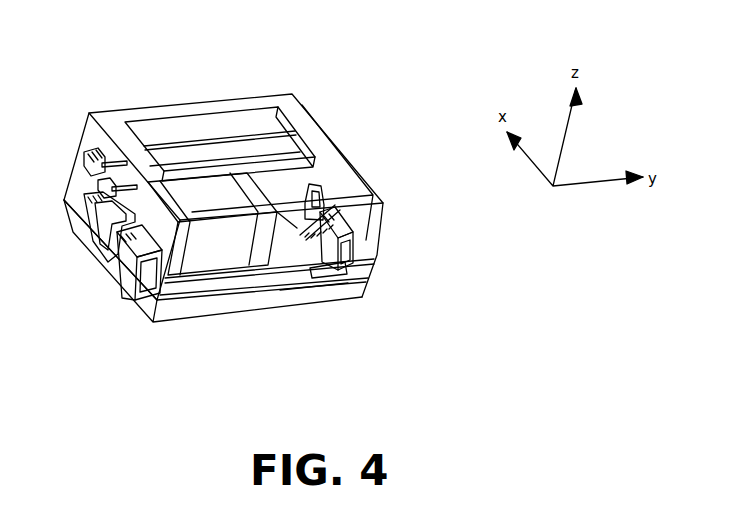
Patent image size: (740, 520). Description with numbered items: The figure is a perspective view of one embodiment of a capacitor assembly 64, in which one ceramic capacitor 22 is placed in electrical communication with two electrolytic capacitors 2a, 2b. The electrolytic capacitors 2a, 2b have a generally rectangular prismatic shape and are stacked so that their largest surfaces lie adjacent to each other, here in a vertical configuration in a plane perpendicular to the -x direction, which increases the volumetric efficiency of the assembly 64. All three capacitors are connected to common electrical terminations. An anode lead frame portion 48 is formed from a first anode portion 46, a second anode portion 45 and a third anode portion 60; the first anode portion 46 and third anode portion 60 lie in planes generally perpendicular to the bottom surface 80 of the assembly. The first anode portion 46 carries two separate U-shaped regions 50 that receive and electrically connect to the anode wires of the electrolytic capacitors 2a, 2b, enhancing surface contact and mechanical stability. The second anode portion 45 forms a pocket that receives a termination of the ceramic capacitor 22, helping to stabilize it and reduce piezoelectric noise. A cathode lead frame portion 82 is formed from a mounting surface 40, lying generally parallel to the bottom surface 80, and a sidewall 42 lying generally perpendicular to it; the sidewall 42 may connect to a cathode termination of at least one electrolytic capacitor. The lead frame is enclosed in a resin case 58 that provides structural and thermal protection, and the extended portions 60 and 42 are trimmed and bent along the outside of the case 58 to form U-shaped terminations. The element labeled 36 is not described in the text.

The capacitor assembly 64 is at (122, 52).
The U-shaped regions 50 is at (109, 142).
The first anode portion 46 is at (90, 165).
The electrolytic capacitor 2a is at (265, 120).
The electrolytic capacitor 2b is at (285, 148).
The encapsulated case 58 is at (345, 180).
The cathode lead frame portion 82 is at (380, 223).
The anode lead frame portion 48 is at (70, 258).
The third anode portion 60 is at (118, 268).
The second anode portion 45 is at (156, 292).
The sidewall 42 is at (328, 240).
The ceramic capacitor 22 is at (226, 200).
The base edge 36 is at (297, 288).
The bottom surface 80 is at (182, 322).
The mounting surface 40 is at (301, 262).